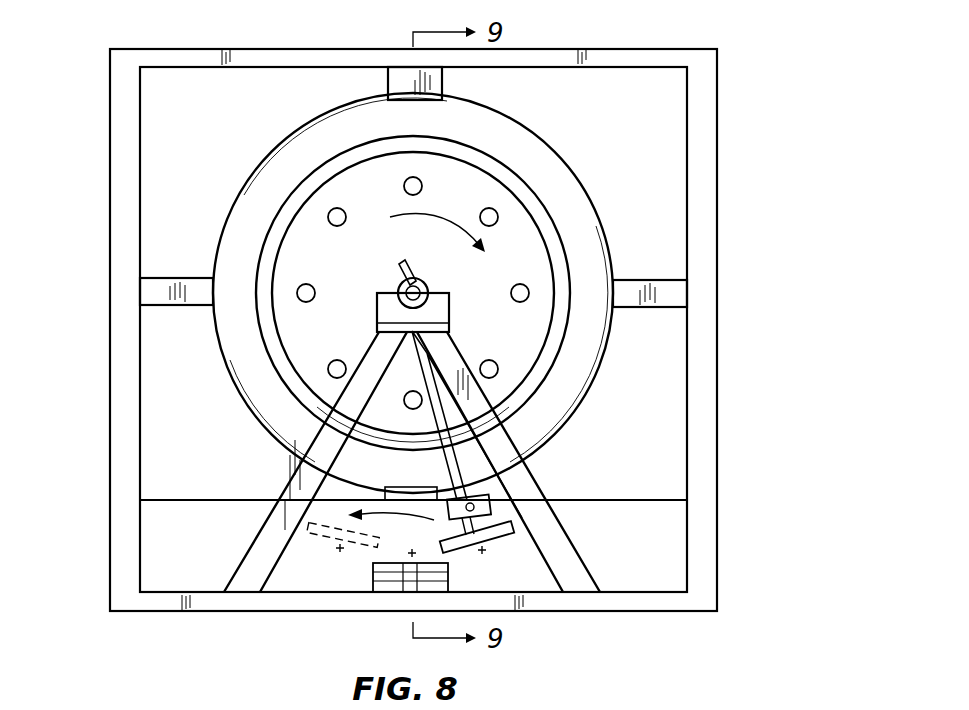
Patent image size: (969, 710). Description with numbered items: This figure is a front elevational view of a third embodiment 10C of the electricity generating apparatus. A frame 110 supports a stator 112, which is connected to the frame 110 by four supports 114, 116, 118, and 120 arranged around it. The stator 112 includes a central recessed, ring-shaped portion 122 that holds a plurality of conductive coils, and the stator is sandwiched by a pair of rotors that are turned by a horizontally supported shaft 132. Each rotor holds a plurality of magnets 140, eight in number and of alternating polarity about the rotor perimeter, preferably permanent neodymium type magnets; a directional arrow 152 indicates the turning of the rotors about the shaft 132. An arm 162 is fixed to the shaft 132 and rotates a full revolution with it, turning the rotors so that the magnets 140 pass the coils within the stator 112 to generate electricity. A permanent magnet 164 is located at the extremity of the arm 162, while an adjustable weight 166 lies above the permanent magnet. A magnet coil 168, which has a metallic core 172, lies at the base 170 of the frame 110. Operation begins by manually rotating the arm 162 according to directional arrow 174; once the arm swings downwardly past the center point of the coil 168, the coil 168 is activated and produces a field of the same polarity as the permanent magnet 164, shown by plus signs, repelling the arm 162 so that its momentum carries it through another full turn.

The frame 110 is at (774, 58).
The embodiment 10C is at (605, 616).
The stator 112 is at (262, 207).
The support 114 is at (320, 497).
The support 116 is at (150, 293).
The support 118 is at (400, 78).
The support 120 is at (648, 292).
The central recessed ring-shaped portion 122 is at (530, 220).
The shaft 132 is at (426, 289).
The plurality of magnets 140 is at (542, 268).
The directional arrow 152 is at (446, 218).
The arm 162 is at (472, 452).
The permanent magnet 164 is at (516, 521).
The adjustable weight 166 is at (490, 497).
The magnet coil 168 is at (378, 592).
The base 170 is at (157, 600).
The metallic core 172 is at (377, 580).
The directional arrow 174 is at (377, 522).